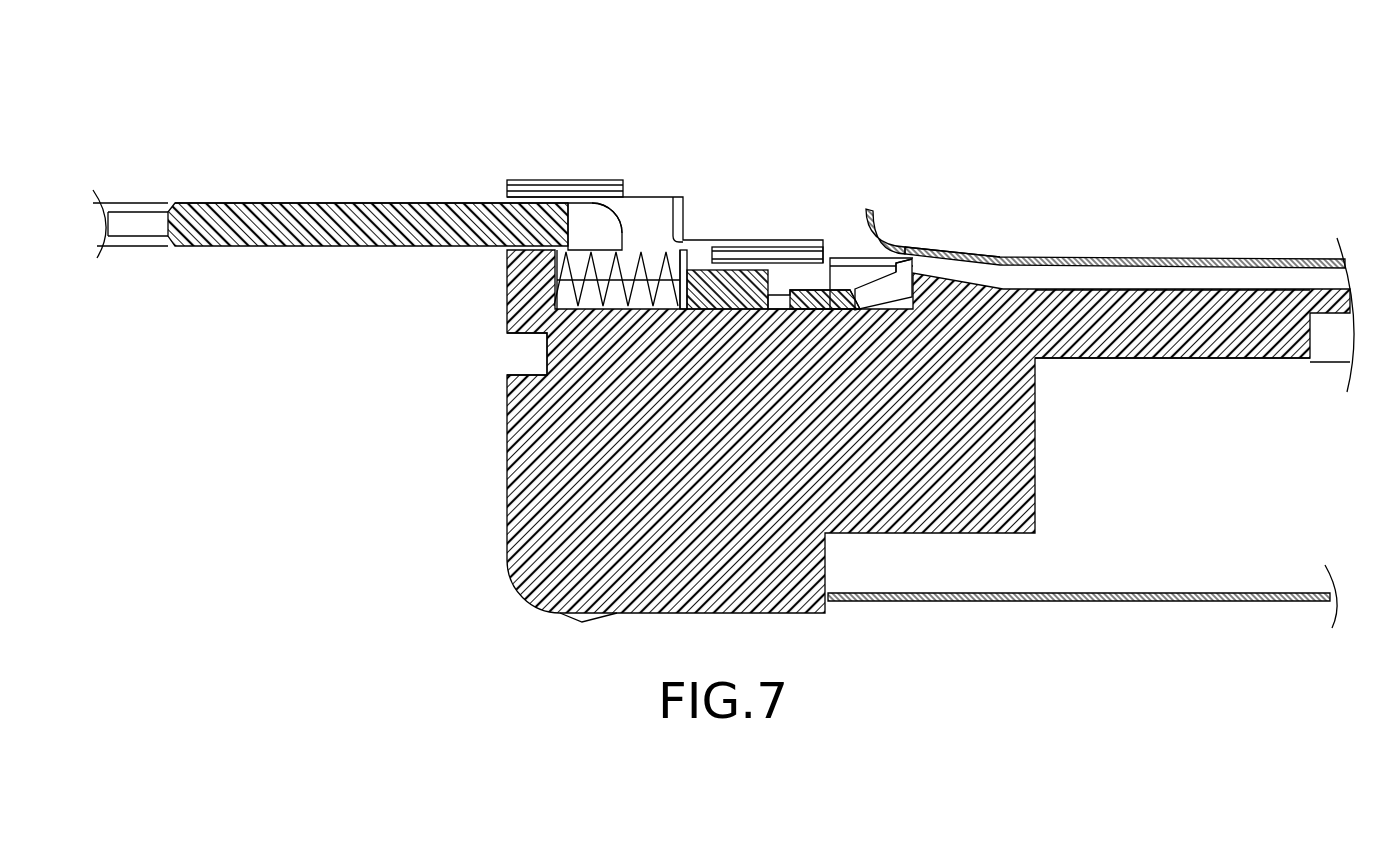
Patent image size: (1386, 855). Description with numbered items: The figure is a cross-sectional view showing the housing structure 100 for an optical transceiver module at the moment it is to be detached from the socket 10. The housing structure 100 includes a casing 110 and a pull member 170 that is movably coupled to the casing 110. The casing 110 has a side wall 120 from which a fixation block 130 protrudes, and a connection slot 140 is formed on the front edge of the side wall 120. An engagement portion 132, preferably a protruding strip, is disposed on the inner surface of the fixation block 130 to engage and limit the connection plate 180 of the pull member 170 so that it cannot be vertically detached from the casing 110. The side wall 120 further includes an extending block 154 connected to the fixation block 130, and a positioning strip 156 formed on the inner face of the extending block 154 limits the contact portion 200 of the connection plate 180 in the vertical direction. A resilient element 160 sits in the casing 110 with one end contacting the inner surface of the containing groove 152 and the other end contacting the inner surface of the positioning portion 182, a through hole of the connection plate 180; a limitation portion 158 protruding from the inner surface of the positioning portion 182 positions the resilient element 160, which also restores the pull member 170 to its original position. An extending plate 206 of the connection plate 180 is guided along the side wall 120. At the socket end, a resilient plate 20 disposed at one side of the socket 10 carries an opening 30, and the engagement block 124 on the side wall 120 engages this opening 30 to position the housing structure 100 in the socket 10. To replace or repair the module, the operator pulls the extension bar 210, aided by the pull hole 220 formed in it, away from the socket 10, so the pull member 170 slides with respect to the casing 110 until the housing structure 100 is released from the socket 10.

The housing structure 100 is at (477, 108).
The socket 10 is at (1133, 260).
The resilient plate 20 is at (870, 210).
The opening 30 is at (990, 256).
The casing 110 is at (530, 456).
The side wall 120 is at (1192, 292).
The engagement block 124 is at (947, 242).
The fixation block 130 is at (667, 195).
The engagement portion 132 is at (558, 186).
The connection slot 140 is at (902, 306).
The containing groove 152 is at (547, 356).
The extending block 154 is at (787, 240).
The positioning strip 156 is at (762, 255).
The limitation portion 158 is at (680, 228).
The resilient element 160 is at (557, 296).
The pull member 170 is at (288, 195).
The connection plate 180 is at (604, 192).
The positioning portion 182 is at (600, 228).
The contact portion 200 is at (737, 290).
The extending plate 206 is at (910, 262).
The extension bar 210 is at (383, 213).
The pull hole 220 is at (138, 220).